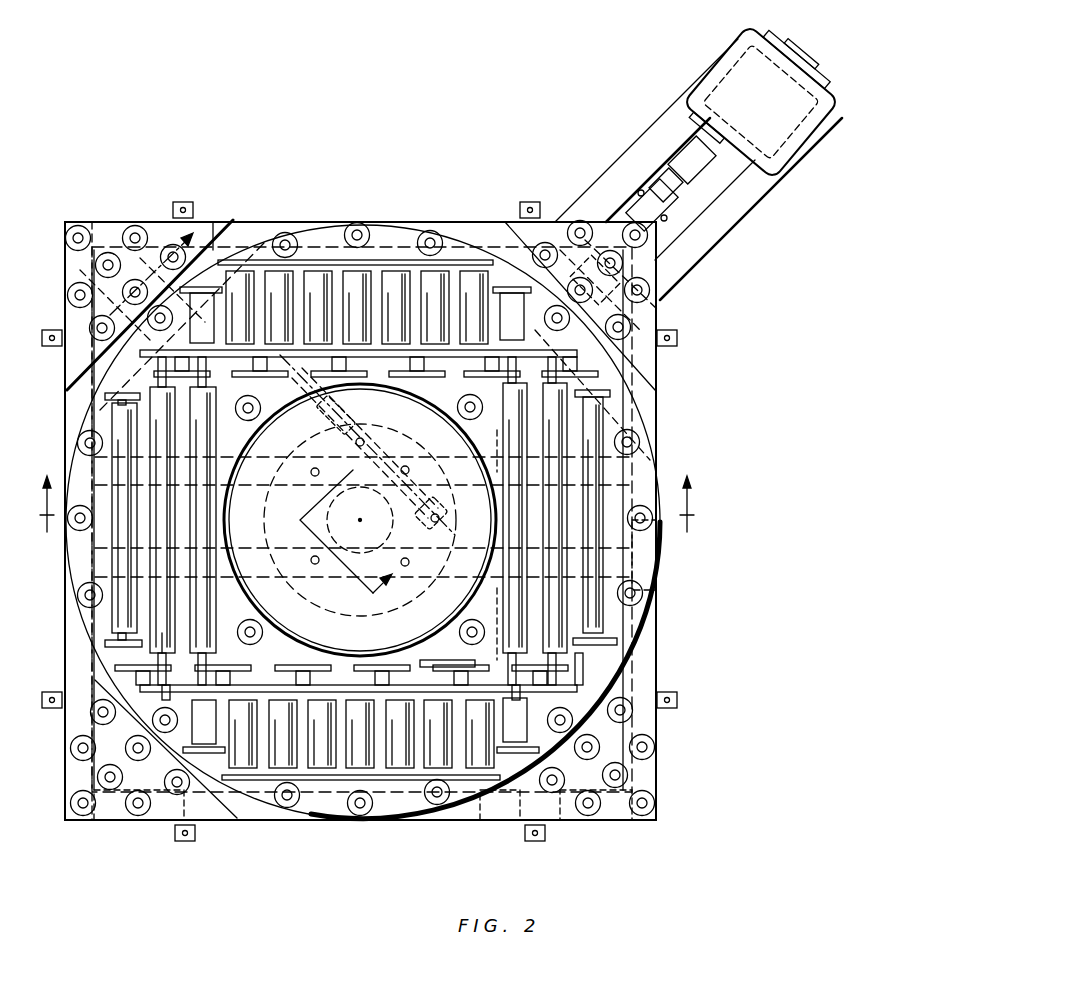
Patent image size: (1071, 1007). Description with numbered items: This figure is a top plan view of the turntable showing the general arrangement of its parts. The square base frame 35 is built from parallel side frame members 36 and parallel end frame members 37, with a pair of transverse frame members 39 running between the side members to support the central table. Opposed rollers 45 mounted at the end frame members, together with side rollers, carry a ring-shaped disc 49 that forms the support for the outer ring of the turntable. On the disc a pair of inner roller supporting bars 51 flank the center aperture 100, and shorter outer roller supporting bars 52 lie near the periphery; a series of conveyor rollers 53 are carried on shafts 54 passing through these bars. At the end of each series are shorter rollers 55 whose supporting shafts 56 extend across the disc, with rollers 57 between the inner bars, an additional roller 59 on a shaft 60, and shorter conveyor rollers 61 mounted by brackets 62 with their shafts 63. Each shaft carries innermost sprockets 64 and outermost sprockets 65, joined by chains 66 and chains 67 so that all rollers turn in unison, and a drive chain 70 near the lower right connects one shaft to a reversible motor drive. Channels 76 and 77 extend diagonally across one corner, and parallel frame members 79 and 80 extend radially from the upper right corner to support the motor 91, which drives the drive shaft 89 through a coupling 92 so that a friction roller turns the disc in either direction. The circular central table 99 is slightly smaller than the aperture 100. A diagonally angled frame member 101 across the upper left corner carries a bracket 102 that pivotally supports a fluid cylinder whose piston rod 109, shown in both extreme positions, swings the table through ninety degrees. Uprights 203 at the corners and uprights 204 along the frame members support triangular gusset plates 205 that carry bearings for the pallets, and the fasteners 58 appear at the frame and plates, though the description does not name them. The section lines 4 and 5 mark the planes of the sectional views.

The section line 4- 4 is at (367, 516).
The section line 5- 5 is at (251, 424).
The square base frame 35 is at (665, 783).
The side frame members 36 is at (62, 735).
The end frame members 37 is at (478, 215).
The transverse frame members 39 is at (487, 540).
The rollers 45 is at (383, 222).
The ring-shaped disc 49 is at (373, 489).
The inner roller supporting bars 51 is at (375, 365).
The outer roller supporting bars 52 is at (313, 262).
The conveyor rollers 53 is at (352, 316).
The shafts 54 is at (440, 328).
The shorter rollers 55 is at (195, 322).
The supporting shafts 56 is at (248, 700).
The rollers 57 is at (210, 506).
The bolt 58 is at (168, 766).
The additional roller 59 is at (165, 538).
The shaft 60 is at (235, 617).
The shorter conveyor rollers 61 is at (138, 528).
The brackets 62 is at (180, 395).
The shafts 63 is at (137, 420).
The innermost sprockets 64 is at (415, 378).
The outermost sprockets 65 is at (390, 660).
The chains 66 is at (298, 665).
The chains 67 is at (427, 665).
The drive chain 70 is at (480, 734).
The channel 76 is at (640, 385).
The channel 77 is at (640, 310).
The frame member 79 is at (658, 155).
The frame member 80 is at (725, 215).
The drive shaft 89 is at (640, 200).
The motor 91 is at (778, 150).
The coupling 92 is at (690, 140).
The central table 99 is at (362, 520).
The center aperture 100 is at (440, 408).
The diagonally angled frame member 101 is at (58, 258).
The bracket 102 is at (200, 230).
The piston rod 109 is at (367, 445).
The uprights 203 is at (655, 822).
The uprights 204 is at (660, 673).
The triangular gusset plates 205 is at (165, 805).